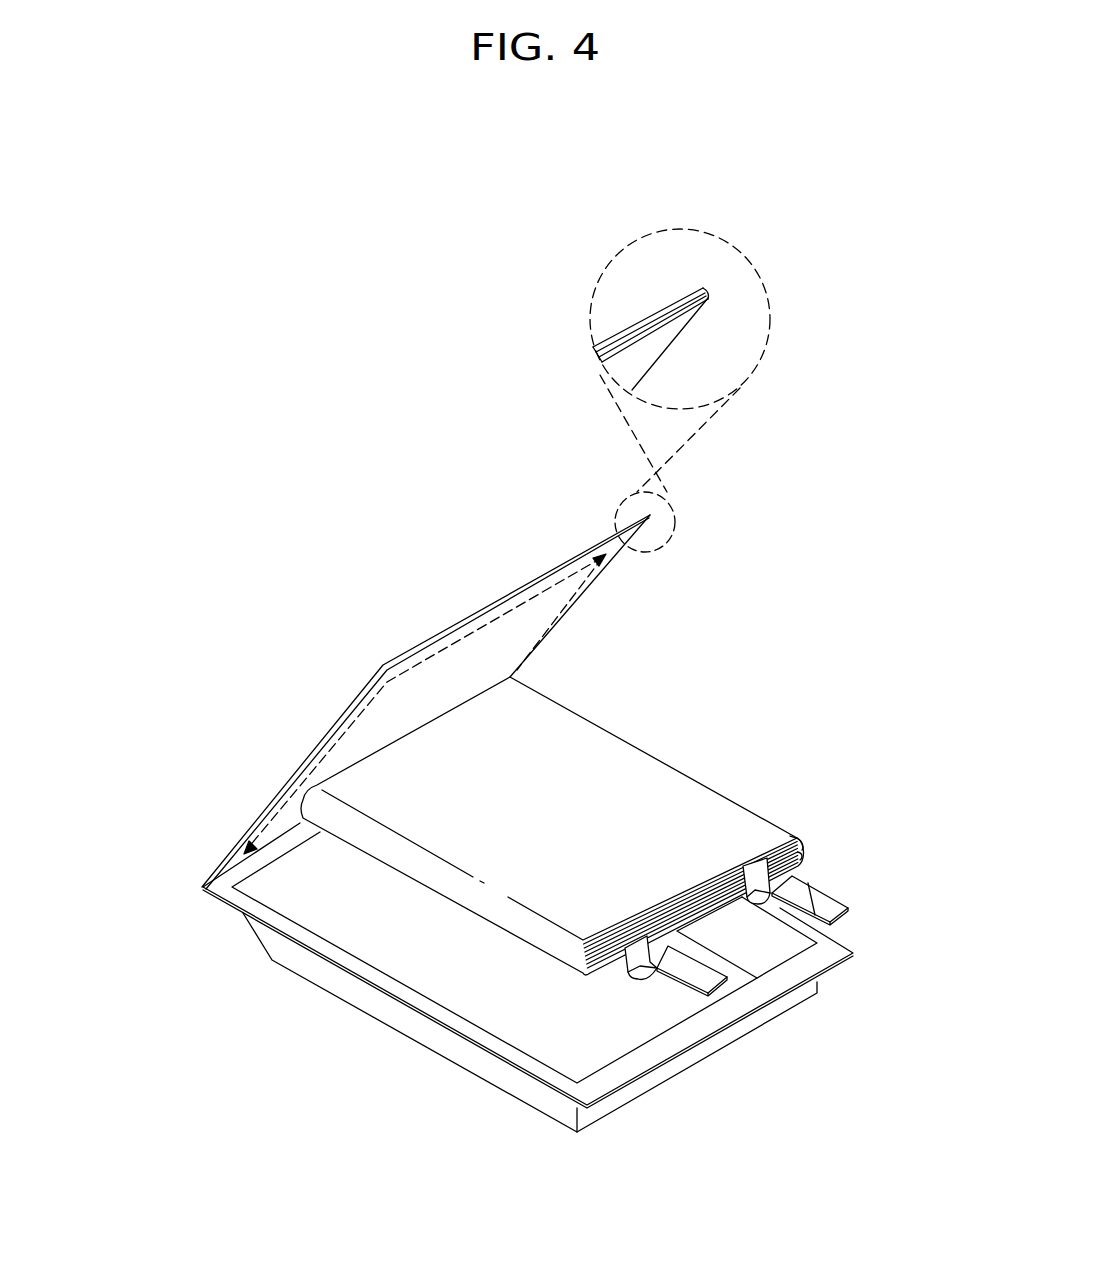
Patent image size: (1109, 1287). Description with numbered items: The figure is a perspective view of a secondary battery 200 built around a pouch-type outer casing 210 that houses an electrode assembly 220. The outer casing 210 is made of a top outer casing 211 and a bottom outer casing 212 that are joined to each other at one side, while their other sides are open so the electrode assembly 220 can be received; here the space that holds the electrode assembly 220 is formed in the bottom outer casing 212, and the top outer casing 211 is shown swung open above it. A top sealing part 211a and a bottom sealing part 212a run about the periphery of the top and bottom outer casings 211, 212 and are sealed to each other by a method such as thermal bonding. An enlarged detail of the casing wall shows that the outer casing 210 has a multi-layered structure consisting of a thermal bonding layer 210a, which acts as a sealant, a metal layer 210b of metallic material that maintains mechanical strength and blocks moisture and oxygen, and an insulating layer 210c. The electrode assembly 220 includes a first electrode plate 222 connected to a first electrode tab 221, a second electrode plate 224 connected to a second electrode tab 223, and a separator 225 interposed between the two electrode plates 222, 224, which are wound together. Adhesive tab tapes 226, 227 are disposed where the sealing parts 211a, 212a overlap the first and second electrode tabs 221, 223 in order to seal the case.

The secondary battery 200 is at (283, 492).
The pouch-type outer casing 210 is at (130, 829).
The thermal bonding layer 210a is at (708, 297).
The metal layer 210b is at (707, 290).
The insulating layer 210c is at (707, 287).
The top outer casing 211 is at (233, 838).
The top sealing part 211a is at (299, 773).
The bottom outer casing 212 is at (271, 944).
The bottom sealing part 212a is at (520, 1058).
The electrode assembly 220 is at (625, 712).
The first electrode tab 221 is at (833, 914).
The first electrode plate 222 is at (802, 845).
The second electrode tab 223 is at (712, 990).
The second electrode plate 224 is at (800, 854).
The separator 225 is at (802, 848).
The adhesive tab tape 226 is at (817, 882).
The adhesive tab tape 227 is at (663, 972).